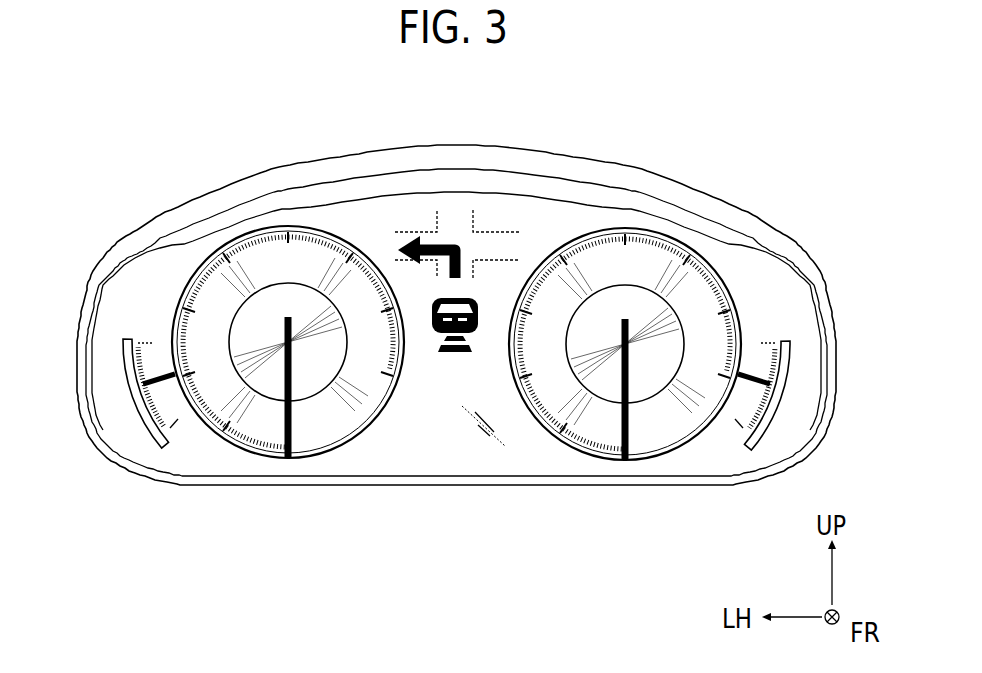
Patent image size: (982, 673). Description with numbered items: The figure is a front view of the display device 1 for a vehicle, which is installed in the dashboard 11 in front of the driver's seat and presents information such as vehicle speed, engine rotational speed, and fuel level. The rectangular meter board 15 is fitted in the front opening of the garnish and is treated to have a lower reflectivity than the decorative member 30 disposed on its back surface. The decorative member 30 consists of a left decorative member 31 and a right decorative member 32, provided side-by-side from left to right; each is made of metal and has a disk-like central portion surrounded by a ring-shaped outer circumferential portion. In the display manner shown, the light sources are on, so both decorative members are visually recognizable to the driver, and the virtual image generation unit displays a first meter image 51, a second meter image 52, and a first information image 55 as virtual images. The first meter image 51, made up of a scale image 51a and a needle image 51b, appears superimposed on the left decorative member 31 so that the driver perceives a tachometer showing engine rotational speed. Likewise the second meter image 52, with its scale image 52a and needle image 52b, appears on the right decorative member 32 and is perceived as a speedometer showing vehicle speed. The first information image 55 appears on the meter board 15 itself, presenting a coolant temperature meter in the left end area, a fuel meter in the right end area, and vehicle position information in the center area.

The display device for a vehicle 1 is at (156, 161).
The dashboard 11 is at (400, 172).
The meter board 15 is at (468, 437).
The decorative member 30 is at (445, 279).
The left decorative member 31 is at (262, 230).
The right decorative member 32 is at (633, 228).
The first meter image 51 is at (210, 297).
The scale image 51a is at (228, 270).
The needle image 51b is at (285, 370).
The second meter image 52 is at (691, 295).
The scale image 52a is at (677, 270).
The needle image 52b is at (627, 370).
The first information image 55 is at (492, 218).